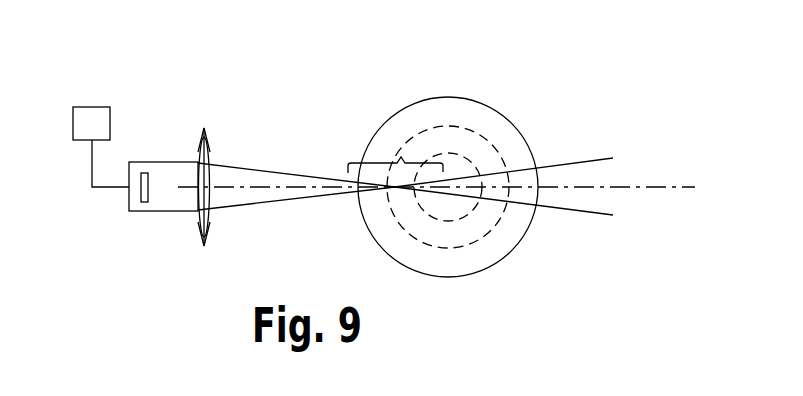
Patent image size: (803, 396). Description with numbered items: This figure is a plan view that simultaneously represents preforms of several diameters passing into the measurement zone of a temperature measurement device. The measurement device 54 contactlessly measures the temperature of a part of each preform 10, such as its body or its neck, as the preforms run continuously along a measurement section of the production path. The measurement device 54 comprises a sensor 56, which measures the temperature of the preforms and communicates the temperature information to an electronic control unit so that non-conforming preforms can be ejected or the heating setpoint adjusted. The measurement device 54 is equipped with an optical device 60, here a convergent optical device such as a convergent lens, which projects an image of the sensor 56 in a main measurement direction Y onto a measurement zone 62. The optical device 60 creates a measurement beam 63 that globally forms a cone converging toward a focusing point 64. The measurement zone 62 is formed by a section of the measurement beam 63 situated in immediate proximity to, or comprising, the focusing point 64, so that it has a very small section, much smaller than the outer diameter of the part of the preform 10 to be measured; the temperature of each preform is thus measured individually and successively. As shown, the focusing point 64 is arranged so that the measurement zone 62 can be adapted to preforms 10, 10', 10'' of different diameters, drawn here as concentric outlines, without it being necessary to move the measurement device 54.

The preform 10 is at (455, 157).
The preform 10' is at (446, 143).
The preform 10'' is at (448, 135).
The measurement device 54 is at (160, 222).
The sensor 56 is at (148, 179).
The optical device 60 is at (208, 178).
The measurement zone 62 is at (401, 157).
The measurement beam 63 is at (272, 171).
The focusing point 64 is at (392, 197).
The main measurement direction Y is at (662, 187).